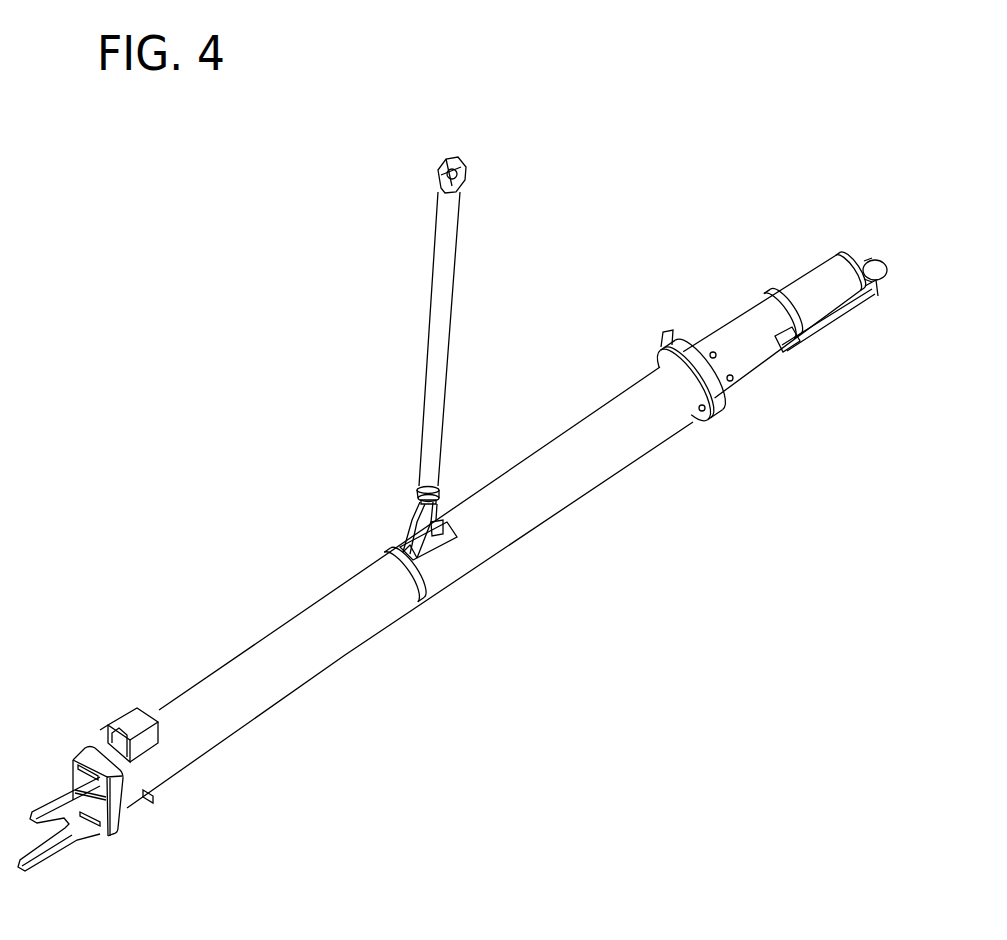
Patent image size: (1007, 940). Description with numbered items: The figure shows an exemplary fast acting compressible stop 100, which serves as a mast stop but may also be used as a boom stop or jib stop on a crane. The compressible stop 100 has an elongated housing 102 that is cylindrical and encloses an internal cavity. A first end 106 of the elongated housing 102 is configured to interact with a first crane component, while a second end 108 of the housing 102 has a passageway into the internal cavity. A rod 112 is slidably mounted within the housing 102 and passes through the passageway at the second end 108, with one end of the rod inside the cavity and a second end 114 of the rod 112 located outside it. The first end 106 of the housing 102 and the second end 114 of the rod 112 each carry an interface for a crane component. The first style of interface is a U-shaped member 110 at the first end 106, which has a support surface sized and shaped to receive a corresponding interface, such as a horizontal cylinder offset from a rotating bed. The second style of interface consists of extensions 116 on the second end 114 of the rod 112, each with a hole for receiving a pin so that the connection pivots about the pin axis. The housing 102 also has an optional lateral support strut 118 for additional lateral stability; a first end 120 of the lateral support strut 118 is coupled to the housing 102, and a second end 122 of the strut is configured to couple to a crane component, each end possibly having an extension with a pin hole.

The compressible stop 100 is at (580, 688).
The elongated housing 102 is at (650, 452).
The first end of the elongated housing 106 is at (63, 688).
The second end of the housing 108 is at (760, 278).
The U-shaped member 110 is at (67, 838).
The rod 112 is at (817, 278).
The second end of the rod 114 is at (847, 216).
The extensions 116 is at (875, 253).
The lateral support strut 118 is at (436, 395).
The first end of the lateral support strut 120 is at (403, 473).
The second end of the lateral support strut 122 is at (421, 128).